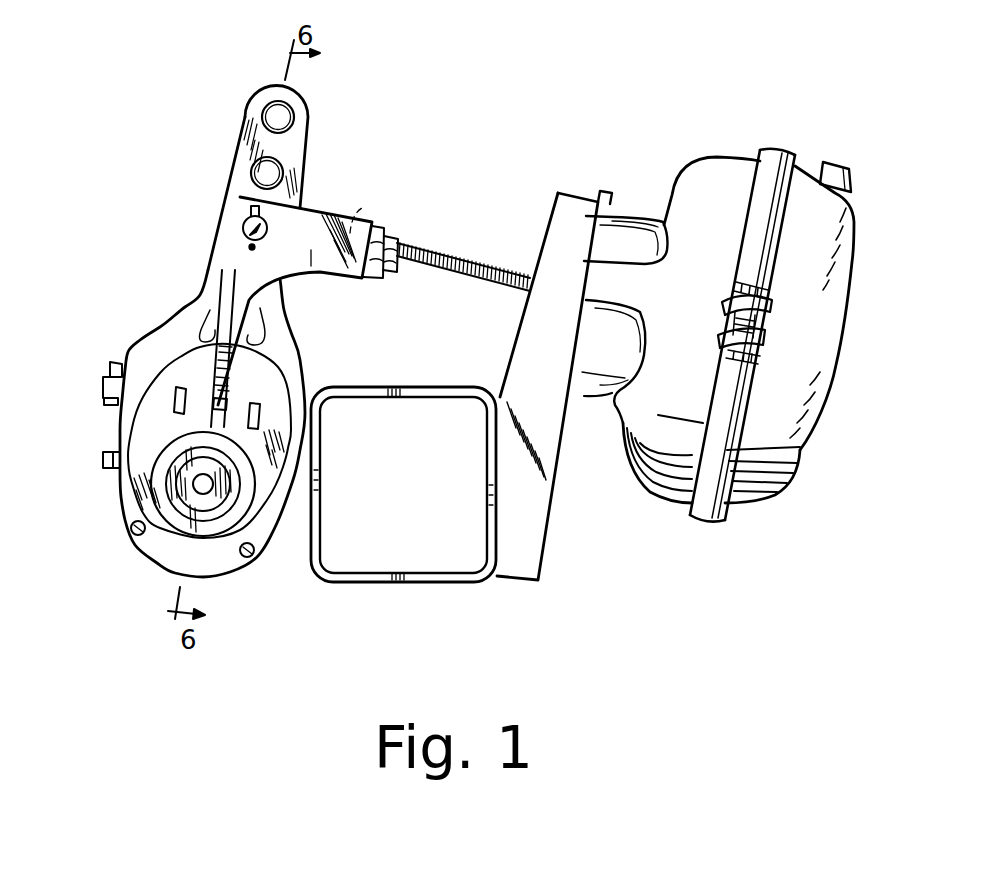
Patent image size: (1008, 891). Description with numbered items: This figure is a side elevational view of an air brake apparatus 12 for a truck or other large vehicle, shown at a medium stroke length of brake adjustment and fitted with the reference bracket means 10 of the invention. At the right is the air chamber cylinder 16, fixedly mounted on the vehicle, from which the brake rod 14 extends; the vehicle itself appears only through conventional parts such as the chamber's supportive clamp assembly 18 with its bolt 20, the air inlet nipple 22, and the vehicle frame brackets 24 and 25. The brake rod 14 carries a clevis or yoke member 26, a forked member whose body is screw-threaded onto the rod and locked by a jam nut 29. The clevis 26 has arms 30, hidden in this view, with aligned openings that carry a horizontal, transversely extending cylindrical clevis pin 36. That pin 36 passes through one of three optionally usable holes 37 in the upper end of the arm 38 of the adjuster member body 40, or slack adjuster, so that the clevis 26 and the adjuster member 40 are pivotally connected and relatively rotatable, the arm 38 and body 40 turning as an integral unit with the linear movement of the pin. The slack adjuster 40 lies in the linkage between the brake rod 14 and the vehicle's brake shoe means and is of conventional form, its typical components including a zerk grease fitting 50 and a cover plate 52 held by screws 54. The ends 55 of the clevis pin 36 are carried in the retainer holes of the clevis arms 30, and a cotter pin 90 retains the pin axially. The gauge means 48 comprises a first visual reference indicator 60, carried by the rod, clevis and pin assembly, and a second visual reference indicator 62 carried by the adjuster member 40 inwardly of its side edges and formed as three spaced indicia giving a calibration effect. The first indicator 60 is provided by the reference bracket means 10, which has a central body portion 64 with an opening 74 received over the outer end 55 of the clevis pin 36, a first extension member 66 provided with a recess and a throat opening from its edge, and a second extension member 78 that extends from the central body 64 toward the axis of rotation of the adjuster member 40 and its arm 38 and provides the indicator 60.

The reference bracket means 10 is at (328, 204).
The air brake apparatus 12 is at (440, 224).
The brake rod 14 is at (458, 260).
The air chamber cylinder 16 is at (817, 348).
The clamp assembly 18 is at (725, 407).
The bolt 20 is at (762, 280).
The air inlet nipple 22 is at (829, 162).
The vehicle frame bracket 24 is at (533, 535).
The vehicle frame bracket 25 is at (397, 576).
The clevis or yoke member 26 is at (366, 208).
The jam nut 29 is at (387, 270).
The arms 30 is at (312, 280).
The clevis pin 36 is at (248, 218).
The holes 37 is at (286, 117).
The arm 38 is at (247, 143).
The adjuster member body 40 is at (122, 423).
The gauge means 48 is at (194, 364).
The zerk grease fitting 50 is at (103, 460).
The cover plate 52 is at (128, 487).
The screws 54 is at (132, 538).
The ends of clevis pin 55 is at (243, 228).
The first visual reference indicator 60 is at (223, 388).
The second visual reference indicator 62 is at (160, 396).
The central body portion 64 is at (280, 295).
The first extension member 66 is at (367, 280).
The opening 74 is at (268, 230).
The second extension member 78 is at (230, 293).
The cotter pin 90 is at (254, 214).